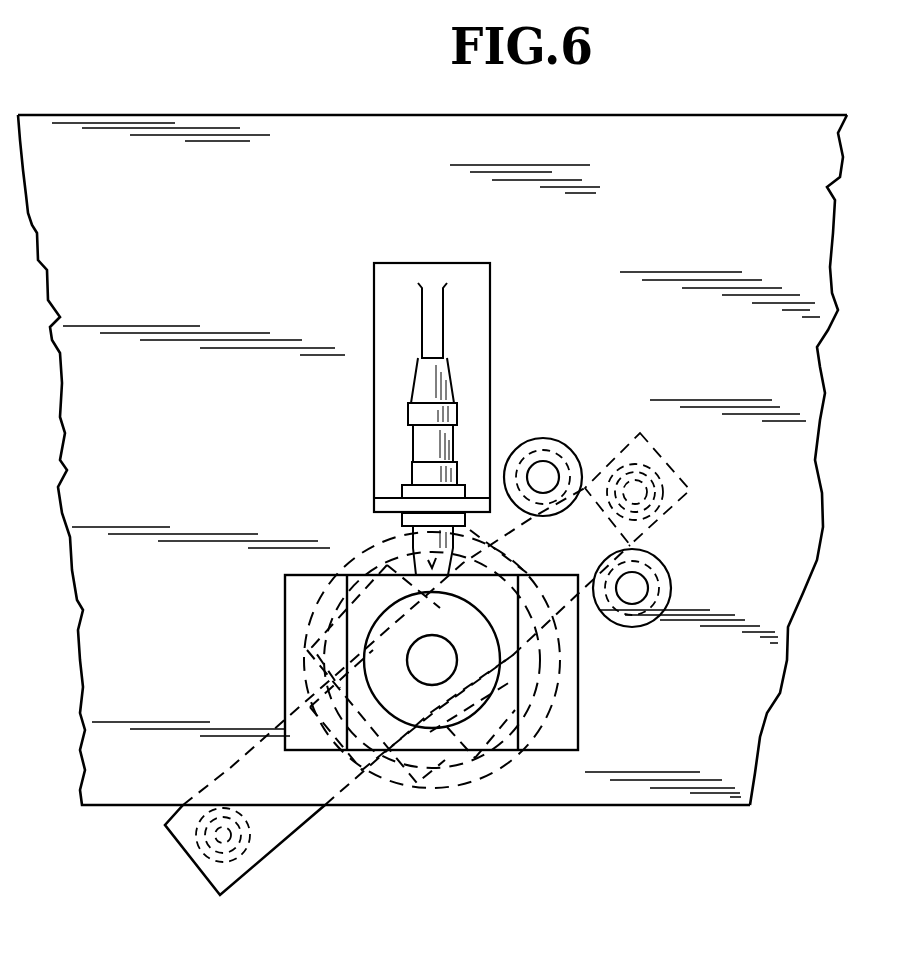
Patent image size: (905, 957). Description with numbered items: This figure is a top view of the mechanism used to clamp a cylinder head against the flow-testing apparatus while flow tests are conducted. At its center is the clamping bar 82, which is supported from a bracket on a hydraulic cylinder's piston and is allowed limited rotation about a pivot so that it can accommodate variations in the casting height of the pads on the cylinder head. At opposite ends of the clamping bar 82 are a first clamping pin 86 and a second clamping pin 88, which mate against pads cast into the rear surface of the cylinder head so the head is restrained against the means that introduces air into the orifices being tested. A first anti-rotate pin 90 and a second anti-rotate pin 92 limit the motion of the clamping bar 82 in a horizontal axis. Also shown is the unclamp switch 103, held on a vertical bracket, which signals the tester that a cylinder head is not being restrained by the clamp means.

The clamping bar 82 is at (300, 815).
The first clamping pin 86 is at (240, 850).
The second clamping pin 88 is at (655, 496).
The first anti-rotate pin 90 is at (638, 590).
The second anti-rotate pin 92 is at (543, 470).
The unclamp switch 103 is at (440, 440).